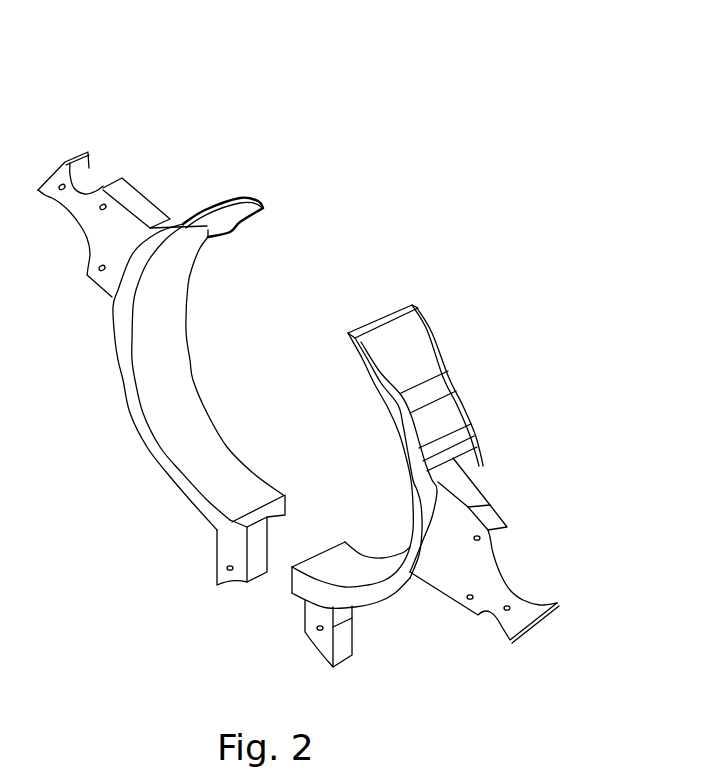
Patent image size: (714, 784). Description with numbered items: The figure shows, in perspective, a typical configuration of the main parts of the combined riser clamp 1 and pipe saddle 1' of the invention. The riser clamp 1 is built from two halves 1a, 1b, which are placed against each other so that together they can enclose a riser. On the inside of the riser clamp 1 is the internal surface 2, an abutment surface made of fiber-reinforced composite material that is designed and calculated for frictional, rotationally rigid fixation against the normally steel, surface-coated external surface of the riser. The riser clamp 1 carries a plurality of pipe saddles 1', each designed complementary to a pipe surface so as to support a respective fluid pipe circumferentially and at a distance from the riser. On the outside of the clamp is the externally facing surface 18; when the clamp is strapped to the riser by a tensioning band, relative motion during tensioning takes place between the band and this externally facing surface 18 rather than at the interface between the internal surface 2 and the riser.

The riser clamp 1 is at (326, 376).
The first half of the riser clamp 1a is at (253, 158).
The second half of the riser clamp 1b is at (427, 278).
The pipe saddle 1' is at (326, 390).
The internal surface 2 is at (175, 315).
The externally facing surface 18 is at (420, 357).